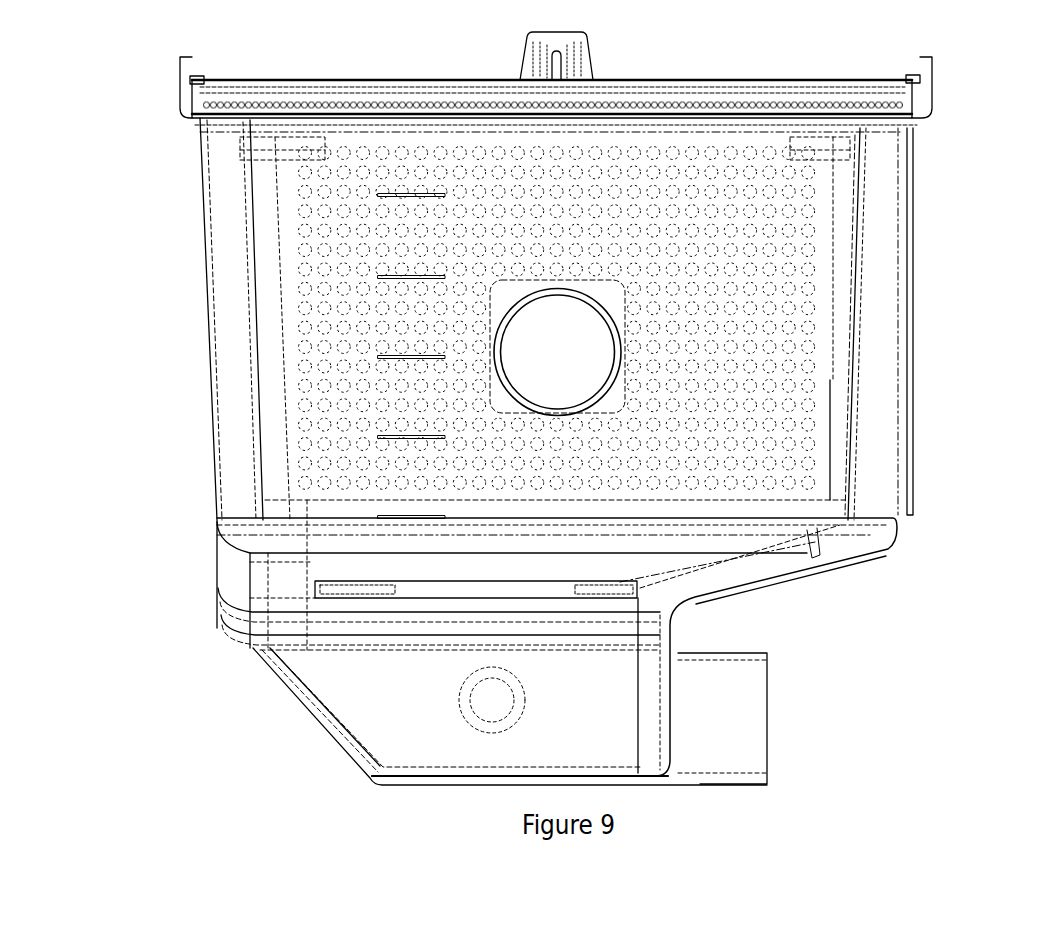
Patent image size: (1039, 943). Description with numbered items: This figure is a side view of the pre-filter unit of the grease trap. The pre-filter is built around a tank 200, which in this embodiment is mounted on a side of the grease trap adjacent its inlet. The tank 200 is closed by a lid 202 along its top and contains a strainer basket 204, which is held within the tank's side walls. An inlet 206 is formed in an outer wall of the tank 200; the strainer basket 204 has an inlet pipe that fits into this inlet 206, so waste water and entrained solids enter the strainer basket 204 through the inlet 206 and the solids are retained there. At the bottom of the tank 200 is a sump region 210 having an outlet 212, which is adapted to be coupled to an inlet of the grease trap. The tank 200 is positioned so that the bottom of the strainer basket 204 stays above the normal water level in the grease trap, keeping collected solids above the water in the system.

The tank 200 is at (907, 258).
The lid 202 is at (782, 88).
The strainer basket 204 is at (858, 422).
The inlet 206 is at (582, 363).
The sump region 210 is at (407, 747).
The outlet 212 is at (738, 768).